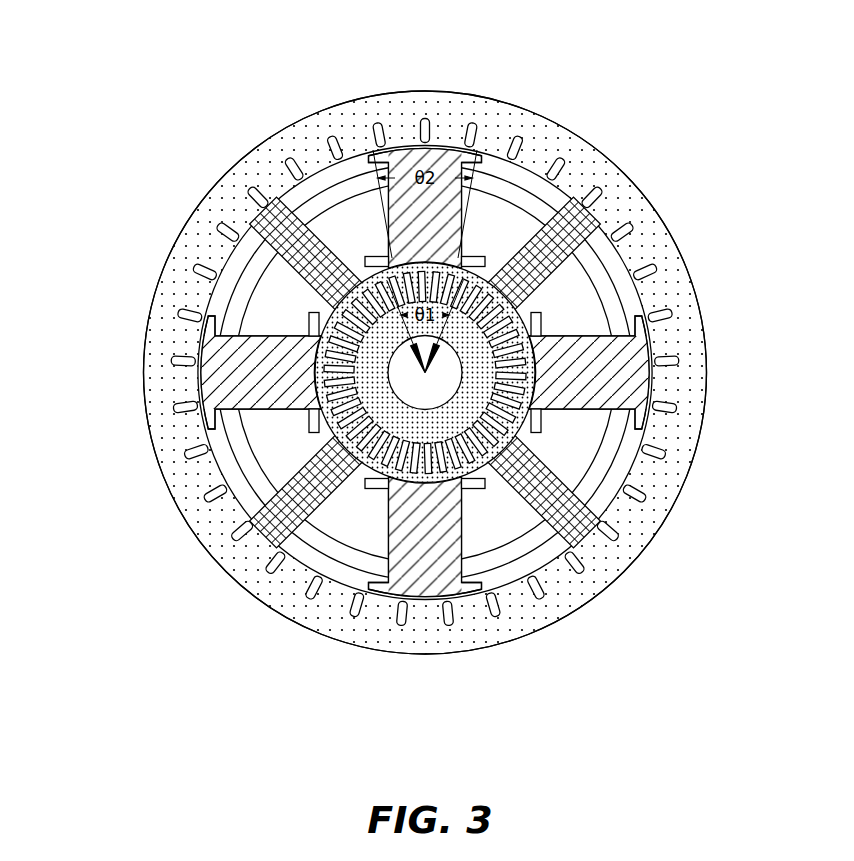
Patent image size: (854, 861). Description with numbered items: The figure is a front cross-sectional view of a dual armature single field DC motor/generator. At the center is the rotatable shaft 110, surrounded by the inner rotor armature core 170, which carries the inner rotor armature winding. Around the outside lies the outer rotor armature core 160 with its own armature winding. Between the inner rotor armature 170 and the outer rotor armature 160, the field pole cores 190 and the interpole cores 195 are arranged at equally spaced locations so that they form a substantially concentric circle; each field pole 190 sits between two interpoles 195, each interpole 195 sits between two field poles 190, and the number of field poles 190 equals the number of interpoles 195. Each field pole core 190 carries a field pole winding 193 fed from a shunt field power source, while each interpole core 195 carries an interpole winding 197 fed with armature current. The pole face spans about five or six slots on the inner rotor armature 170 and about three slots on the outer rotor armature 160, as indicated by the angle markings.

The rotatable shaft 110 is at (246, 590).
The outer rotor armature core 160 is at (287, 140).
The inner rotor armature core 170 is at (411, 398).
The field pole core 190 is at (437, 153).
The field pole winding 193 is at (248, 327).
The interpole core 195 is at (568, 232).
The interpole winding 197 is at (536, 226).